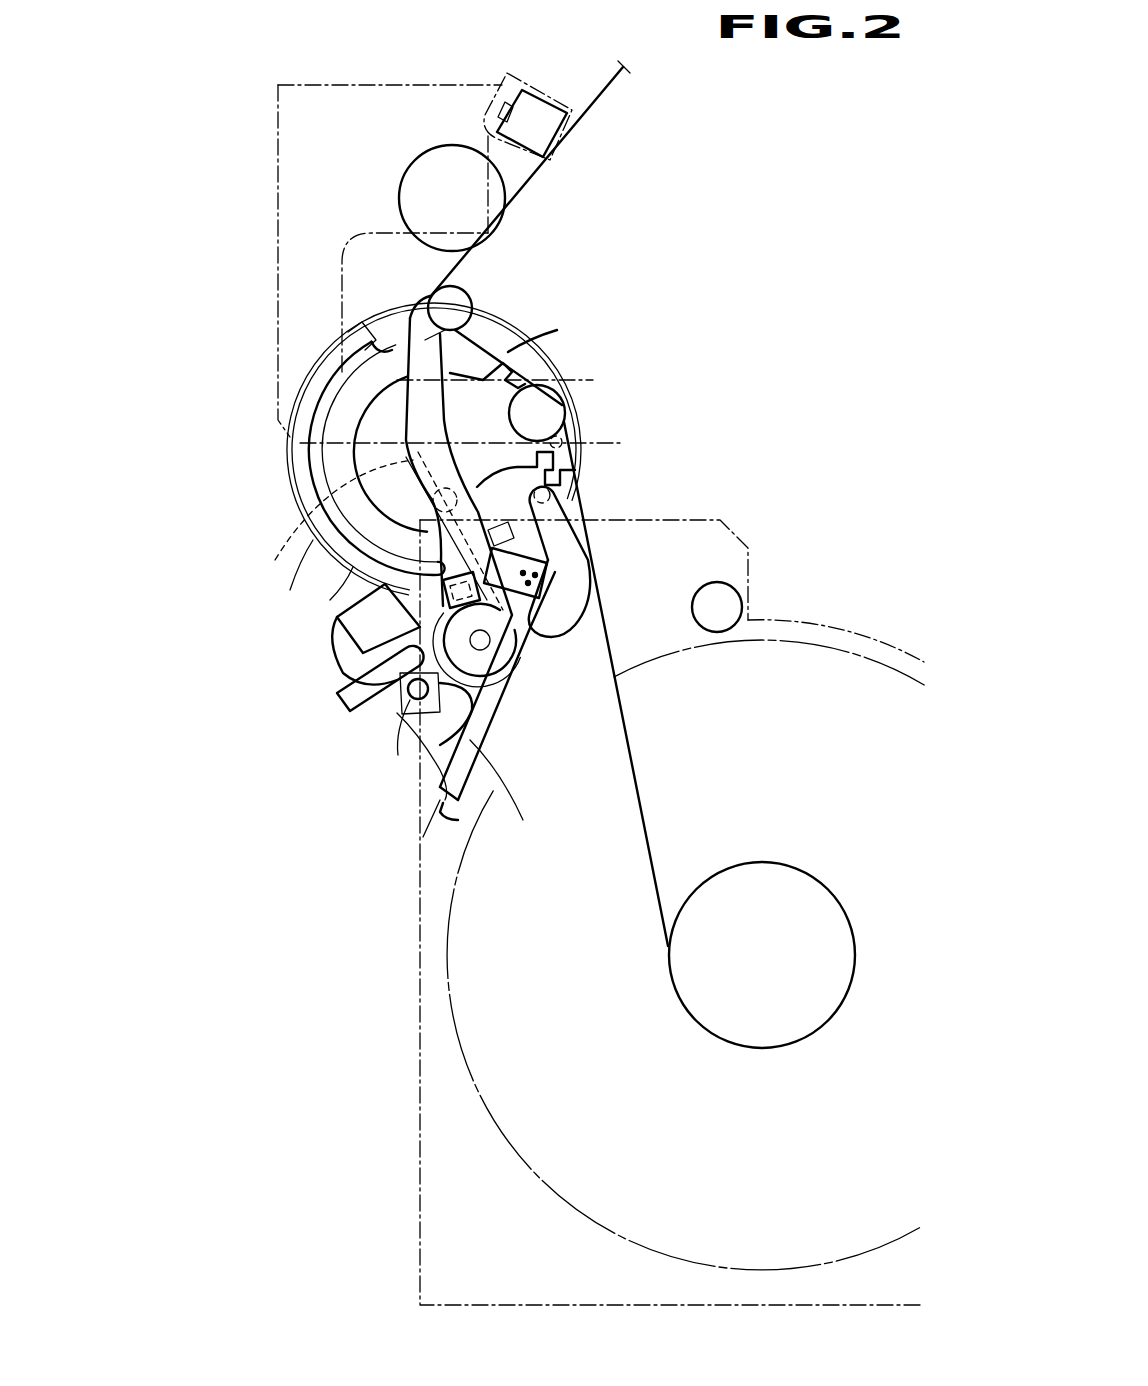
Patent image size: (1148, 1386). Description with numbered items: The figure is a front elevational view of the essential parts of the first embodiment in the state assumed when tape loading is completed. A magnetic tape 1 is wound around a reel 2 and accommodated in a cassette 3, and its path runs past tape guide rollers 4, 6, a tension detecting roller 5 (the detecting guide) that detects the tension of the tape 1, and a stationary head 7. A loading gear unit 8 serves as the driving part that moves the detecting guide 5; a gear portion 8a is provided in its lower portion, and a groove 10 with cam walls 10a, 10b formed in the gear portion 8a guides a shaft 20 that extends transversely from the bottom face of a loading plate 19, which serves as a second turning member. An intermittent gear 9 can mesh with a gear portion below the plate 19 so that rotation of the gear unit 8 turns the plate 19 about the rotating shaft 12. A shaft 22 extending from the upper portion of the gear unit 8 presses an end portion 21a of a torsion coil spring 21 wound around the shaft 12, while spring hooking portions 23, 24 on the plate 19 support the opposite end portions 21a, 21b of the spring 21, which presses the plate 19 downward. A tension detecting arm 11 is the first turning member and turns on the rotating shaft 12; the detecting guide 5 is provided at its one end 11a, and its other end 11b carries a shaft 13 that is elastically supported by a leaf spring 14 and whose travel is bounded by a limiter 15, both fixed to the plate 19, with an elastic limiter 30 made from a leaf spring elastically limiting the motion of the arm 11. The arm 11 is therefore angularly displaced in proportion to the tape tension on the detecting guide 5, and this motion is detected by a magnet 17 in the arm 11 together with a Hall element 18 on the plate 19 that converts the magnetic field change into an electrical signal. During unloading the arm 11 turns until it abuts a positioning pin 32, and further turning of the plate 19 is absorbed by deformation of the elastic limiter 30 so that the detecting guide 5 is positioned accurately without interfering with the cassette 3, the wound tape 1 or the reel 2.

The magnetic tape 1 is at (598, 545).
The reel 2 is at (822, 933).
The cassette 3 is at (748, 578).
The tape guide roller 4 is at (550, 403).
The tension detecting roller 5 is at (455, 307).
The tape guide roller 6 is at (500, 193).
The stationary head 7 is at (540, 133).
The loading gear unit 8 is at (340, 347).
The gear portion 8a is at (302, 432).
The intermittent gear 9 is at (513, 360).
The groove 10 is at (310, 470).
The cam wall 10a is at (330, 600).
The cam wall 10b is at (313, 540).
The tension detecting arm 11 is at (407, 413).
The end of detecting arm 11a is at (427, 340).
The other end of detecting arm 11b is at (408, 760).
The rotating shaft 12 is at (505, 655).
The shaft 13 is at (380, 727).
The leaf spring 14 is at (340, 660).
The limiter 15 is at (340, 700).
The magnet 17 is at (560, 632).
The Hall element 18 is at (432, 500).
The loading plate 19 is at (500, 712).
The shaft 20 is at (552, 490).
The torsion coil spring 21 is at (563, 665).
The end portion of torsion coil spring 21a is at (303, 540).
The end portion of torsion coil spring 21b is at (523, 820).
The shaft 22 is at (558, 442).
The spring hooking portion 23 is at (555, 545).
The spring hooking portion 24 is at (423, 837).
The elastic limiter 30 is at (397, 753).
The positioning pin 32 is at (717, 605).